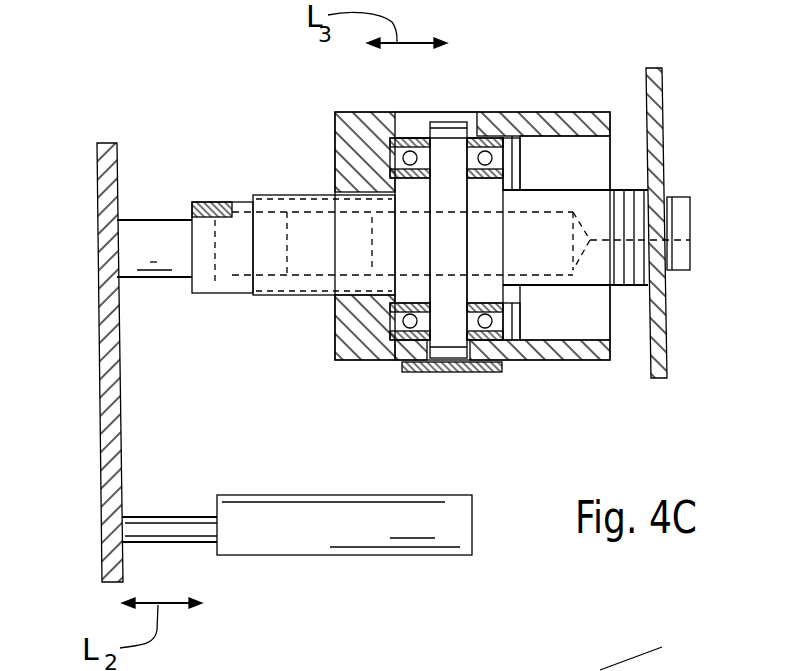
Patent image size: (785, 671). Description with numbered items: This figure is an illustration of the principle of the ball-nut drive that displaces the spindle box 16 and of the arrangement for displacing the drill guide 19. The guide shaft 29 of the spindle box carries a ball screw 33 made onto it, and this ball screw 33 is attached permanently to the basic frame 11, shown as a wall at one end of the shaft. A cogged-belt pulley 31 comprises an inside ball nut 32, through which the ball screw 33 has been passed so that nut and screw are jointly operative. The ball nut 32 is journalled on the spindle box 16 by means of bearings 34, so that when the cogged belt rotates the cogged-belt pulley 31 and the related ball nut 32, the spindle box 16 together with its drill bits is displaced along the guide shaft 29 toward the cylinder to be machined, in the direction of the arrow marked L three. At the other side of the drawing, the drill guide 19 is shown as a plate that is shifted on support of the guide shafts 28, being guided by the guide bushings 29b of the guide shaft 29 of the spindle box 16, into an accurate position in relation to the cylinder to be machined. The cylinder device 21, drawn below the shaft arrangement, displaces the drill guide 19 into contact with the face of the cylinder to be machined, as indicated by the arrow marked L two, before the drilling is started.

The basic frame 11 is at (657, 84).
The spindle box 16 is at (542, 125).
The drill guide 19 is at (97, 282).
The cylinder device 21 is at (445, 503).
The guide shaft 28 is at (147, 230).
The guide shaft 29 is at (600, 278).
The guide bushing 29b is at (205, 203).
The cogged-belt pulley 31 is at (447, 122).
The ball nut 32 is at (492, 186).
The ball screw 33 is at (552, 288).
The bearings 34 is at (395, 115).